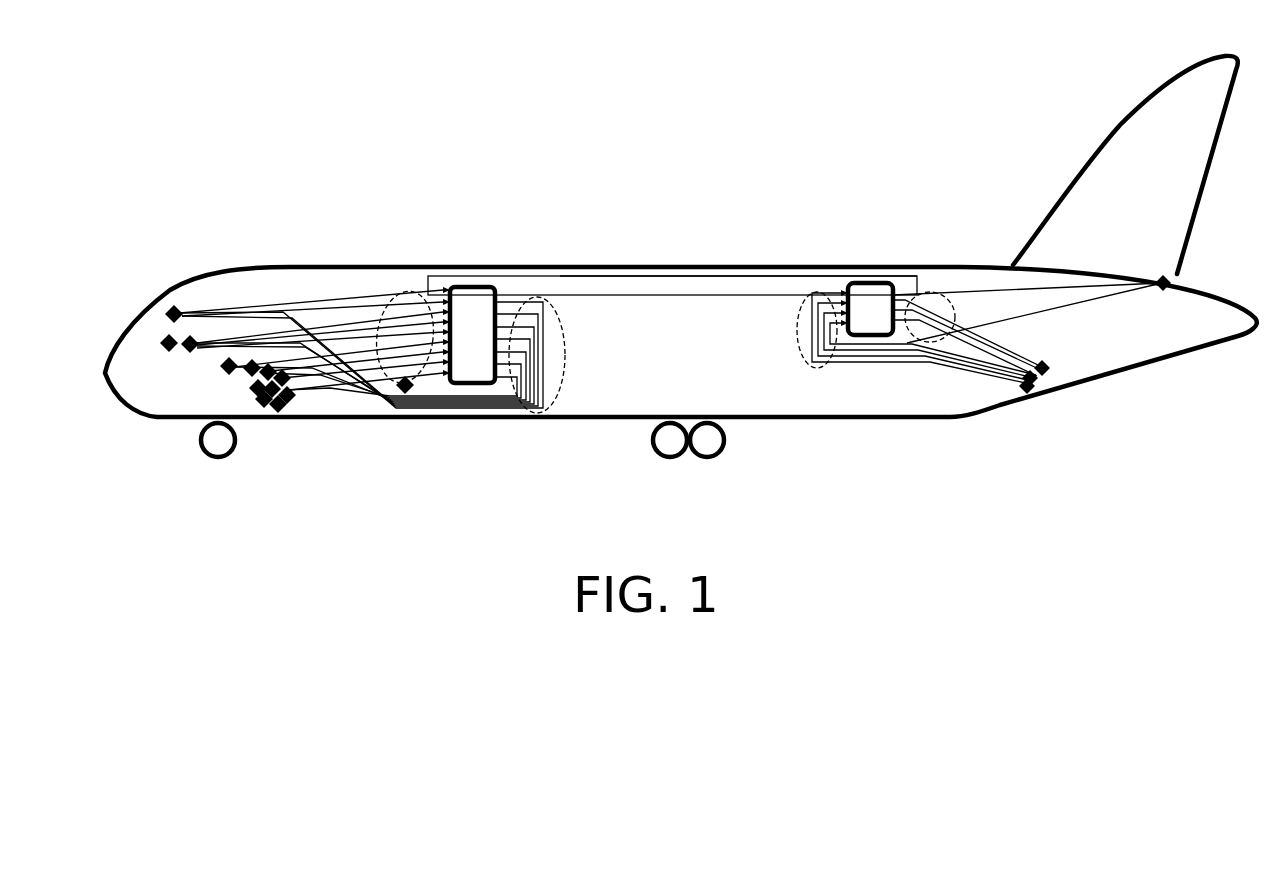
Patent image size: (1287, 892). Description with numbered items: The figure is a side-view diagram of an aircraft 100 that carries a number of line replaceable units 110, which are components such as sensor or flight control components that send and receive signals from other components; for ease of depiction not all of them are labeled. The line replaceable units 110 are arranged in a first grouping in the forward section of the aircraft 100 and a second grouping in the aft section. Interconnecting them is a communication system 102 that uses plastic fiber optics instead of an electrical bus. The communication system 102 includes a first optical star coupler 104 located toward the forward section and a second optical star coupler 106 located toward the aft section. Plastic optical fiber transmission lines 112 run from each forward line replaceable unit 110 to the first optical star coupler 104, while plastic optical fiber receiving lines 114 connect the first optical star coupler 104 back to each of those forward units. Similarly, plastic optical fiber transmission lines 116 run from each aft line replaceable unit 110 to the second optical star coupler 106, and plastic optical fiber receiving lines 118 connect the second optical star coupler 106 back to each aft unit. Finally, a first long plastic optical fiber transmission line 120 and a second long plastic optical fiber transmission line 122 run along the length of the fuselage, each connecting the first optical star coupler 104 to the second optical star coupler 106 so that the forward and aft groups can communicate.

The aircraft 100 is at (478, 267).
The communication system 102 is at (330, 292).
The first optical star coupler 104 is at (470, 385).
The second optical star coupler 106 is at (870, 283).
The line replaceable units 110 is at (172, 305).
The plastic optical fiber transmission lines 112 is at (390, 293).
The plastic optical fiber receiving lines 114 is at (565, 375).
The plastic optical fiber transmission lines 116 is at (812, 338).
The plastic optical fiber receiving lines 118 is at (935, 292).
The first long plastic optical fiber transmission line 120 is at (590, 296).
The second long plastic optical fiber transmission line 122 is at (680, 276).